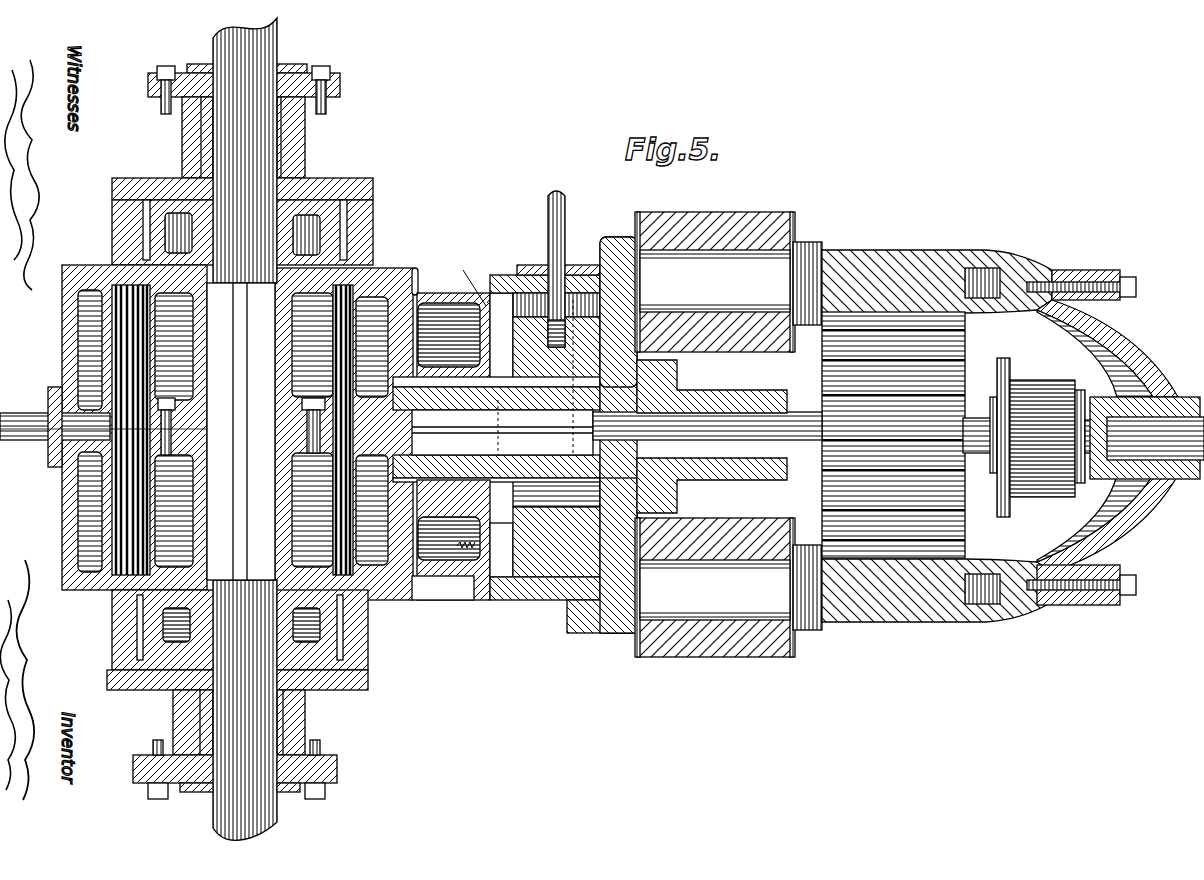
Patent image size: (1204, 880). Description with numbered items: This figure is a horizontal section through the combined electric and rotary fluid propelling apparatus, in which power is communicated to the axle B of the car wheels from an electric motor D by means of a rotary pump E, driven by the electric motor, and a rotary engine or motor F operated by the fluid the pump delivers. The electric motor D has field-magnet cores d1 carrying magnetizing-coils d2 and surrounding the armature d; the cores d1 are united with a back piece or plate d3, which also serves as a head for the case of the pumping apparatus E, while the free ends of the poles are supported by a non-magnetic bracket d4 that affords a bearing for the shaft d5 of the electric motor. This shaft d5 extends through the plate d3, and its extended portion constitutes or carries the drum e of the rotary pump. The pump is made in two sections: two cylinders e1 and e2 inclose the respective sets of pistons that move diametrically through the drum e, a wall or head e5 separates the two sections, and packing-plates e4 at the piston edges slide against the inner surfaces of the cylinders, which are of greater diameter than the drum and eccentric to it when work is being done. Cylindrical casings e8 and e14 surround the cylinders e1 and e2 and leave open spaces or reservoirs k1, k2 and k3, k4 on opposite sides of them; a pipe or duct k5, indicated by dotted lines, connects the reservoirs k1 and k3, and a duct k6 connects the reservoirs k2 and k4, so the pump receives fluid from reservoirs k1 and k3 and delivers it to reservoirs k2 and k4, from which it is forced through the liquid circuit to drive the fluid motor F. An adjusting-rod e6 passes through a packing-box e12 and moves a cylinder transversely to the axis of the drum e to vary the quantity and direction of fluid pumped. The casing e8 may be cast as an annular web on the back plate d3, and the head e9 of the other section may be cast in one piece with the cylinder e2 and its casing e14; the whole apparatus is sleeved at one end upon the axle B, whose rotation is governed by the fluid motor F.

The axle B is at (285, 822).
The rotary engine or motor F is at (241, 431).
The electric motor D is at (895, 618).
The rotary pump E is at (542, 272).
The armature d is at (893, 435).
The field-magnet cores d1 is at (985, 560).
The magnetizing-coils d2 is at (720, 214).
The back piece or plate d3 is at (620, 244).
The non-magnetic bracket d4 is at (1150, 502).
The shaft d5 is at (807, 424).
The drum e is at (512, 402).
The cylinder e1 is at (520, 552).
The cylinder e2 is at (458, 372).
The packing-plates e4 is at (556, 348).
The wall or head e5 is at (504, 372).
The adjusting-rod e6 is at (558, 192).
The cylindrical casing e8 is at (546, 594).
The head e9 is at (414, 298).
The packing-box e12 is at (540, 270).
The cylindrical casing e14 is at (463, 304).
The reservoir k1 is at (504, 567).
The reservoir k2 is at (556, 400).
The reservoir k3 is at (443, 545).
The reservoir k4 is at (463, 270).
The pipe or duct k5 is at (470, 560).
The pipe or duct k6 is at (489, 300).